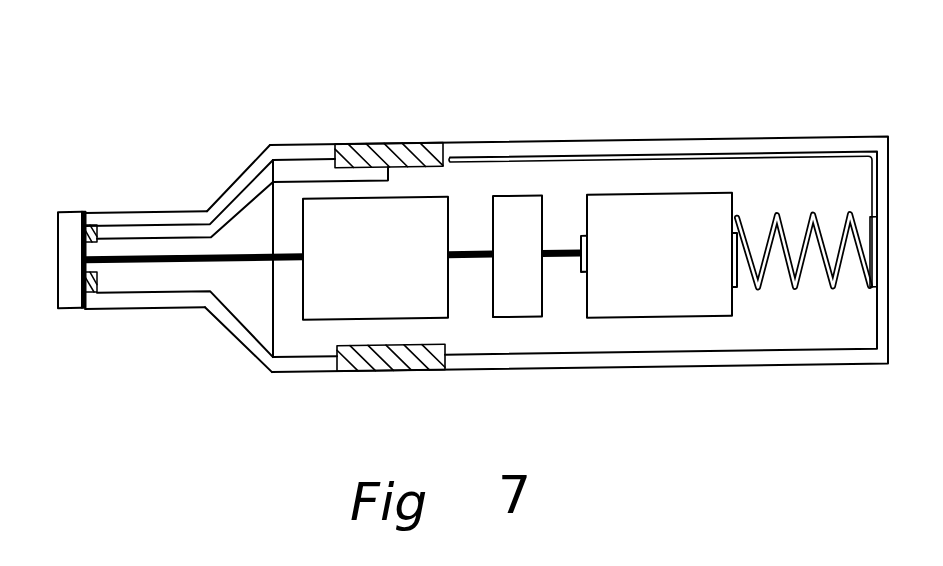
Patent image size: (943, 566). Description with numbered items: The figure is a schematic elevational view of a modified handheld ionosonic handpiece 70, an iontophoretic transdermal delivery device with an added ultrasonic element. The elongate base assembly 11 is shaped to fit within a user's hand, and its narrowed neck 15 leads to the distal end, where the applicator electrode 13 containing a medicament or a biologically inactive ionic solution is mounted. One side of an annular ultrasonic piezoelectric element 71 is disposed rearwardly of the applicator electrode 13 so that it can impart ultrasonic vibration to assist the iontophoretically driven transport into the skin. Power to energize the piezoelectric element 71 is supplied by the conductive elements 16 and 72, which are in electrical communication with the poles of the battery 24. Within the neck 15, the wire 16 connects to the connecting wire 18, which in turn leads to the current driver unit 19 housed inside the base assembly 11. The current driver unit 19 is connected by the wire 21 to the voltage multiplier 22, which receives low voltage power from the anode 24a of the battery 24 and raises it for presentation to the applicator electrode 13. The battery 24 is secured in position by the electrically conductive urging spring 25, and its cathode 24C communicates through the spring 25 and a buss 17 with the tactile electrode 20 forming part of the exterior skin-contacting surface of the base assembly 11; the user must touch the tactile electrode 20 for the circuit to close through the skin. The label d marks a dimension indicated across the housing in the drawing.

The base assembly 11 is at (683, 138).
The applicator electrode 13 is at (58, 230).
The neck 15 is at (173, 308).
The wire 16 is at (133, 264).
The buss 17 is at (607, 157).
The connecting wire 18 is at (247, 264).
The current driver unit 19 is at (375, 258).
The tactile electrode 20 is at (358, 152).
The wire 21 is at (478, 260).
The voltage multiplier 22 is at (517, 256).
The battery 24 is at (659, 255).
The anode 24a is at (582, 270).
The cathode 24C is at (735, 290).
The conductive urging spring 25 is at (777, 213).
The modified handpiece 70 is at (586, 66).
The annular ultrasonic piezoelectric element 71 is at (97, 227).
The conductive element 72 is at (183, 236).
The diameter d is at (529, 415).